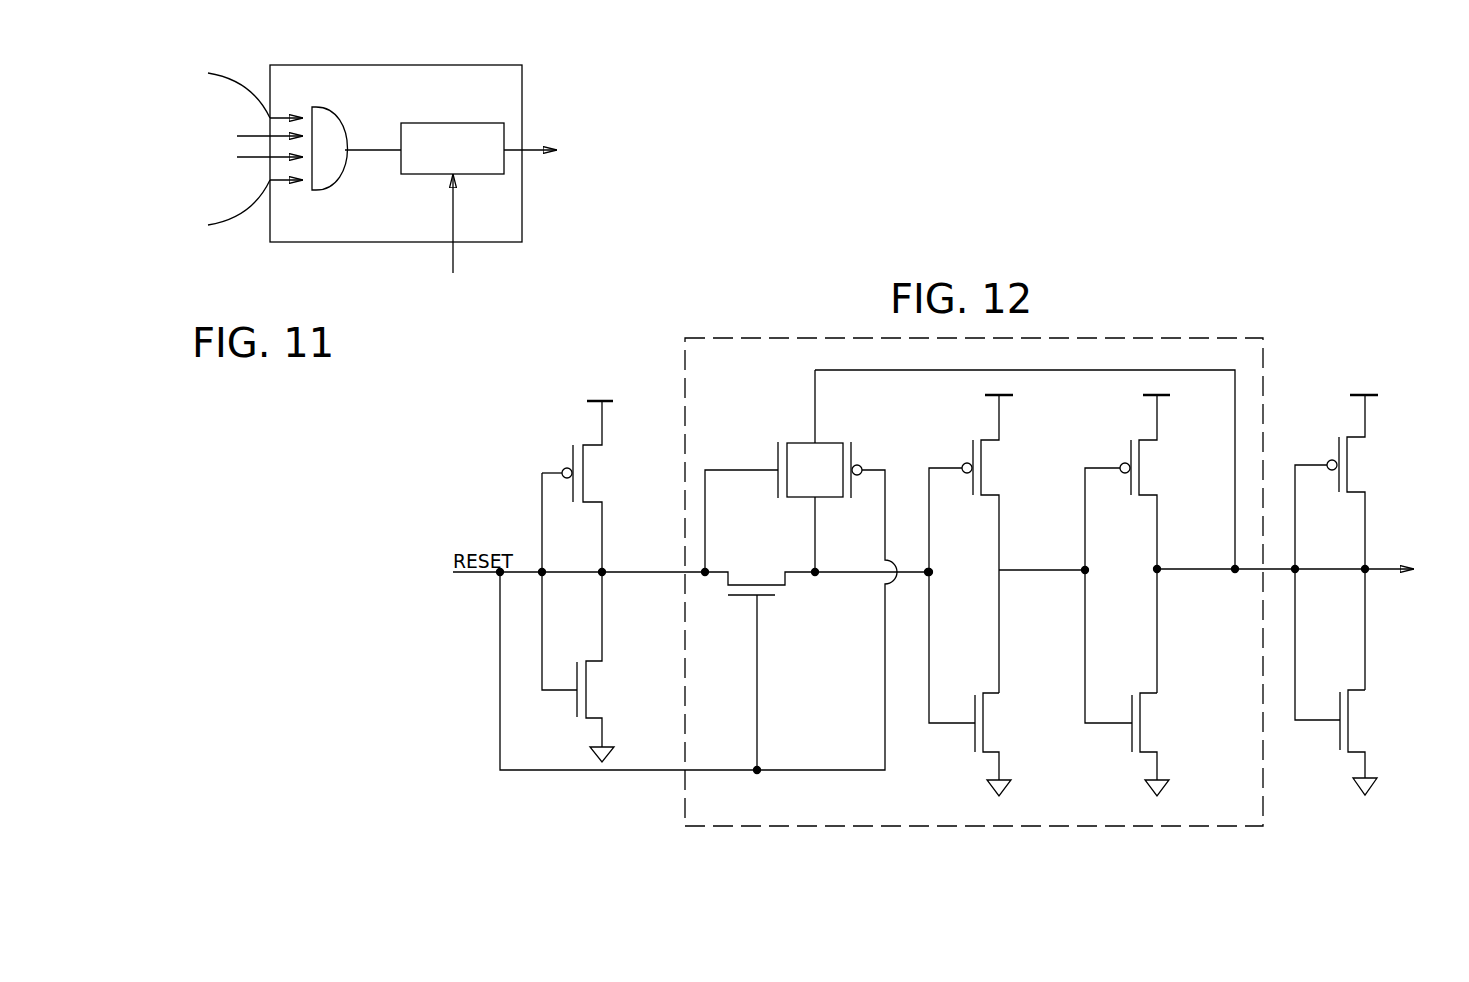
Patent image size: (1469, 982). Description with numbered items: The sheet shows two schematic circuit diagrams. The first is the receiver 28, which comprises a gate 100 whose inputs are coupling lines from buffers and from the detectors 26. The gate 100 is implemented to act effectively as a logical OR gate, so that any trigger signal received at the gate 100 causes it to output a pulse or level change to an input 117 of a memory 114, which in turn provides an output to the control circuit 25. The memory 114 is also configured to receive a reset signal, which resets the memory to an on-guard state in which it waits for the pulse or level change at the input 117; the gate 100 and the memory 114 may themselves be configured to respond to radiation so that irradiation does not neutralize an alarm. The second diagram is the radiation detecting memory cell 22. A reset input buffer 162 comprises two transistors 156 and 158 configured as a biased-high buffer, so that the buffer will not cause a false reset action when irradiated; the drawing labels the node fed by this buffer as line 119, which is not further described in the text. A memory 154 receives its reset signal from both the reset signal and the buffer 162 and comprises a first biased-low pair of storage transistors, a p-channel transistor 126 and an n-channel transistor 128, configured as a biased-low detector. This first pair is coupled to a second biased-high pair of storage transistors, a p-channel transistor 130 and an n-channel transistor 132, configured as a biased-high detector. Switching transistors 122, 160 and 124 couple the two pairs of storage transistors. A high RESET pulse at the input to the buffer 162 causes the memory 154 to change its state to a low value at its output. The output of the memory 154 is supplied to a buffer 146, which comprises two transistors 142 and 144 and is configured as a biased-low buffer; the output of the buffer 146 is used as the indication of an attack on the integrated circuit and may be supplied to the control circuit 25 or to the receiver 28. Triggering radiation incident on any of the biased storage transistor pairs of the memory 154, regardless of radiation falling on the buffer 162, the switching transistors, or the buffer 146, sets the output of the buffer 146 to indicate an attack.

In FIG. 11, the receiver 28 is at (307, 243).
In FIG. 11, the detectors 26 is at (212, 149).
In FIG. 11, the gate 100 is at (323, 191).
In FIG. 11, the input 117 is at (390, 149).
In FIG. 11, the memory 114 is at (467, 123).
In FIG. 11, the control circuit 25 is at (589, 143).
In FIG. 12, the radiation detecting memory cell 22 is at (705, 848).
In FIG. 12, the node line 119 is at (650, 574).
In FIG. 12, the switching transistor 122 is at (778, 456).
In FIG. 12, the switching transistor 124 is at (775, 598).
In FIG. 12, the p-channel transistor 126 is at (981, 465).
In FIG. 12, the n-channel transistor 128 is at (983, 712).
In FIG. 12, the p-channel transistor 130 is at (1139, 465).
In FIG. 12, the n-channel transistor 132 is at (1140, 712).
In FIG. 12, the transistor 142 is at (1348, 710).
In FIG. 12, the transistor 144 is at (1347, 458).
In FIG. 12, the buffer 146 is at (1367, 630).
In FIG. 12, the memory 154 is at (990, 610).
In FIG. 12, the transistor 156 is at (583, 464).
In FIG. 12, the transistor 158 is at (586, 680).
In FIG. 12, the switching transistor 160 is at (851, 455).
In FIG. 12, the reset input buffer 162 is at (698, 633).